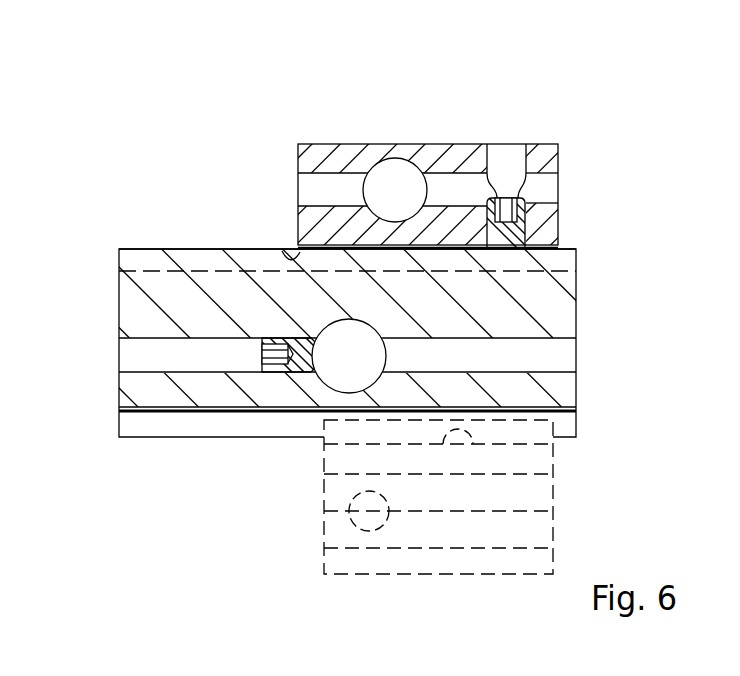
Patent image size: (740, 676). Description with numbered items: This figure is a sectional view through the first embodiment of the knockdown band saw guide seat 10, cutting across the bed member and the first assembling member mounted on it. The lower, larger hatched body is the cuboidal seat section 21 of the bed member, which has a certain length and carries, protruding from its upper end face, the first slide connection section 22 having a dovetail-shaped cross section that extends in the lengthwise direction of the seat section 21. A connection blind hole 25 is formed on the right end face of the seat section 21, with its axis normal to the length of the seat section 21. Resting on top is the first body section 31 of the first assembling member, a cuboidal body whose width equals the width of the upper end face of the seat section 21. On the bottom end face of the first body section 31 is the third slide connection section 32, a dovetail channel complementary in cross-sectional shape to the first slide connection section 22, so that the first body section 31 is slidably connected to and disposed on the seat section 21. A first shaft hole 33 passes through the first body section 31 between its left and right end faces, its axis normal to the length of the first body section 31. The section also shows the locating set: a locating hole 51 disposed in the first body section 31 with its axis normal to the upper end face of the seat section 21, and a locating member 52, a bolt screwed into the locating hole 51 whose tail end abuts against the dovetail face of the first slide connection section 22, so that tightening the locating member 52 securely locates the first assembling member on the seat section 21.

The knockdown band saw guide seat 10 is at (17, 553).
The seat section 21 is at (580, 326).
The first slide connection section 22 is at (567, 258).
The connection blind hole 25 is at (337, 380).
The first body section 31 is at (447, 136).
The third slide connection section 32 is at (283, 250).
The first shaft hole 33 is at (387, 177).
The locating hole 51 is at (530, 239).
The locating member 52 is at (520, 232).